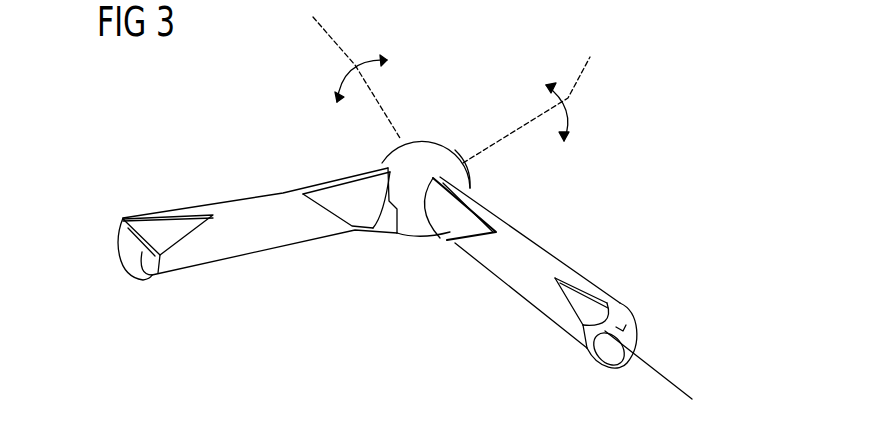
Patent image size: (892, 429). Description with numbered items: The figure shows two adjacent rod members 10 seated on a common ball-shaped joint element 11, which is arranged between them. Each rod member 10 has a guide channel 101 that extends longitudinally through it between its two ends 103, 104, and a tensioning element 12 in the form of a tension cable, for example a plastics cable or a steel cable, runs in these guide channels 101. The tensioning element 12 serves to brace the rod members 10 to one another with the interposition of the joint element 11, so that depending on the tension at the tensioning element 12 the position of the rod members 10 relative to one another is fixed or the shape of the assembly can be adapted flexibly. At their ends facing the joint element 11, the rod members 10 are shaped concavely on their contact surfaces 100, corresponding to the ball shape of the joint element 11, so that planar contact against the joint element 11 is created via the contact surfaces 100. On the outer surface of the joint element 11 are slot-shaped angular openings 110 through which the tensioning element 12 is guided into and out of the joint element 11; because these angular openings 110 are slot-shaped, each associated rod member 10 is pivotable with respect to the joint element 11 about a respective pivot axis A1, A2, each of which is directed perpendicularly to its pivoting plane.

The rod member 10 is at (263, 205).
The joint element 11 is at (428, 152).
The tensioning element 12 is at (661, 372).
The contact surface 100 is at (133, 276).
The guide channel 101 is at (605, 341).
The end of rod member 103 is at (140, 212).
The end of rod member 104 is at (615, 298).
The angular opening 110 is at (465, 167).
The pivot axis A1 is at (353, 69).
The pivot axis A2 is at (534, 101).